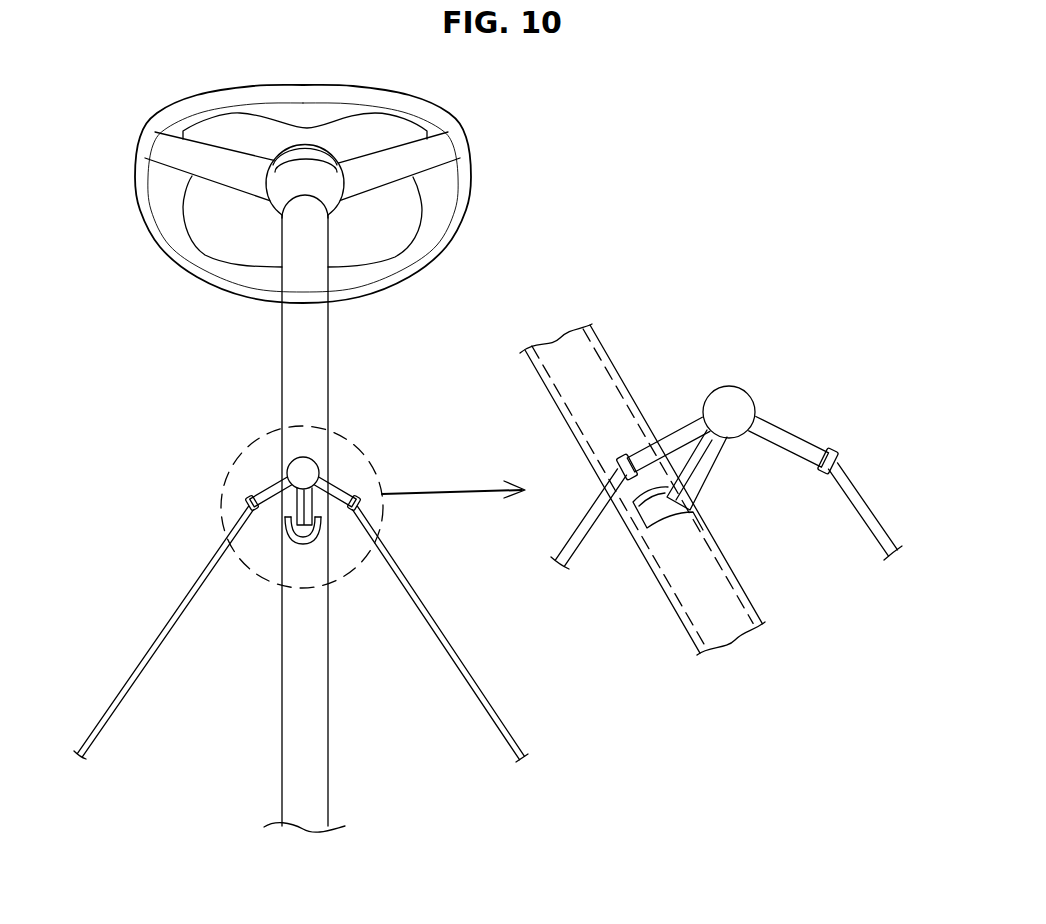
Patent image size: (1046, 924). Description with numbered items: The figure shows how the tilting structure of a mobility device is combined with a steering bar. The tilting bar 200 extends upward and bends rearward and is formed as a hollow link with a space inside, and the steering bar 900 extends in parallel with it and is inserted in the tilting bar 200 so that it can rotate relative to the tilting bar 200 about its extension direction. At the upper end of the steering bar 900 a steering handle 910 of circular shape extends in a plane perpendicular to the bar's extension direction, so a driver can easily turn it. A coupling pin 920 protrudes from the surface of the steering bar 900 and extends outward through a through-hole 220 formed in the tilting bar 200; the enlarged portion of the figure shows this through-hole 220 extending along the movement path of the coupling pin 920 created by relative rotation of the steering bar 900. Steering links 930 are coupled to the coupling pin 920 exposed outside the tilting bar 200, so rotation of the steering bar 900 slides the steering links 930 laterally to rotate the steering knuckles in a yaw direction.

The tilting bar 200 is at (302, 366).
The through-hole 220 is at (630, 533).
The steering bar 900 is at (538, 390).
The steering handle 910 is at (452, 195).
The coupling pin 920 is at (710, 463).
The steering links 930 is at (172, 618).